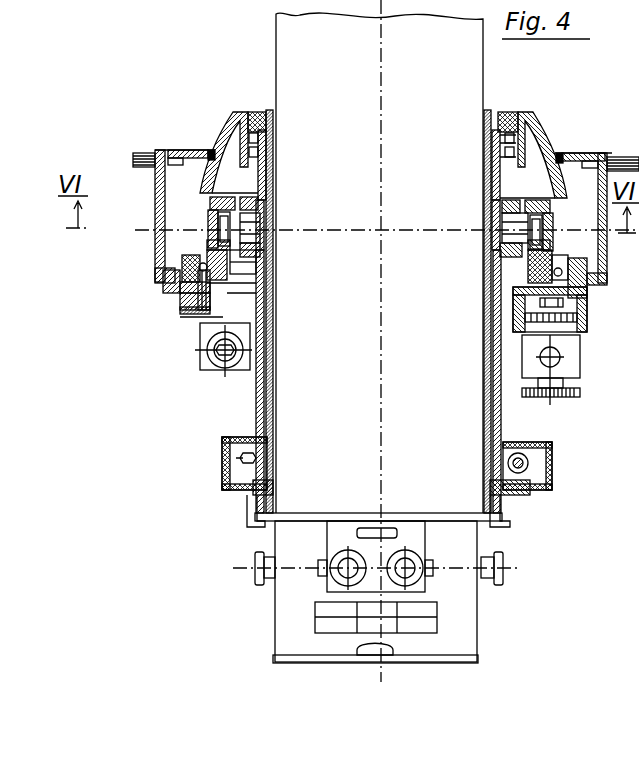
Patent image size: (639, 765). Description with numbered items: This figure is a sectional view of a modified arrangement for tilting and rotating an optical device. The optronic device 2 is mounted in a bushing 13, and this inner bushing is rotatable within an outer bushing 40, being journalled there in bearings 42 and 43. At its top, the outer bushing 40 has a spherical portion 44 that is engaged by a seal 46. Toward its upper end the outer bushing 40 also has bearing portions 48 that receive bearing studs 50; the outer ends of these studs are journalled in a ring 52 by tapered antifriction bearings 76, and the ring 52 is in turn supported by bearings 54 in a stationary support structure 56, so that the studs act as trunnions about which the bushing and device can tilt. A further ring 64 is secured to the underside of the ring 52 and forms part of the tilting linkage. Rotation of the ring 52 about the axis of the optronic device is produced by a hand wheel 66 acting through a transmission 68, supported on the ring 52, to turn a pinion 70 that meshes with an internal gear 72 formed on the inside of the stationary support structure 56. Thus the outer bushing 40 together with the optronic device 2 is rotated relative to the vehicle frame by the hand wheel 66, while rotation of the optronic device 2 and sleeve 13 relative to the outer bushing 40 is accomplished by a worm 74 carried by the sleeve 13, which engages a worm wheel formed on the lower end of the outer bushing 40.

The optronic device 2 is at (460, 90).
The bushing 13 is at (268, 390).
The outer bushing 40 is at (258, 418).
The bearing 42 is at (493, 181).
The bearing 43 is at (497, 157).
The spherical portion 44 is at (237, 118).
The seal 46 is at (205, 150).
The bearing portions 48 is at (250, 212).
The bearing studs 50 is at (250, 238).
The ring 52 is at (207, 258).
The bearings 54 is at (165, 283).
The stationary support structure 56 is at (157, 213).
The ring 64 is at (190, 312).
The hand wheel 66 is at (580, 392).
The transmission 68 is at (573, 357).
The pinion 70 is at (520, 303).
The internal gear 72 is at (575, 308).
The worm 74 is at (540, 488).
The tapered antifriction bearings 76 is at (230, 232).